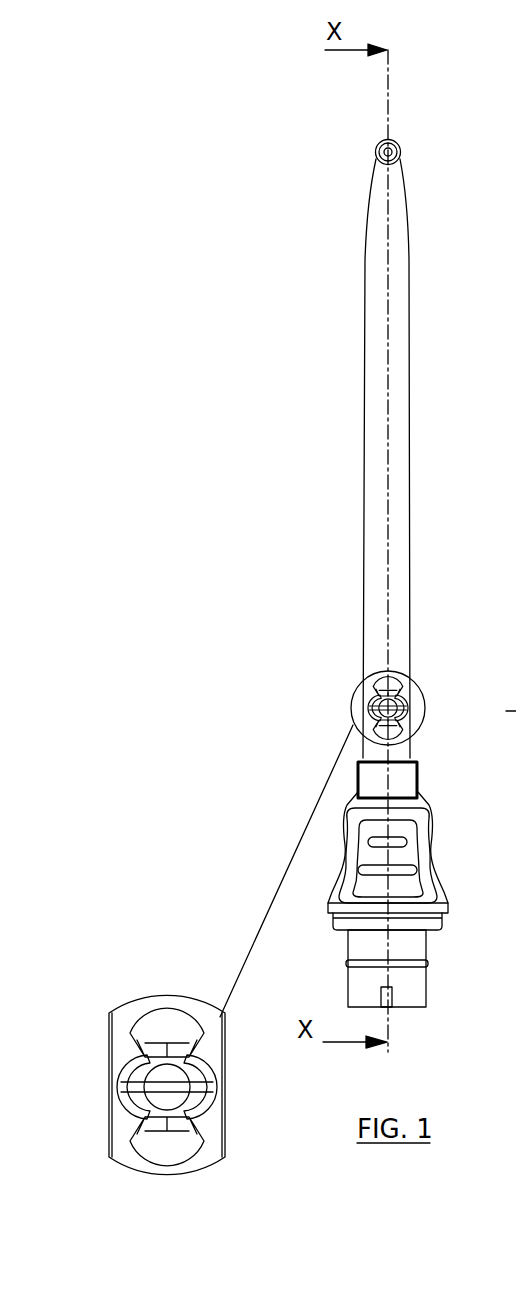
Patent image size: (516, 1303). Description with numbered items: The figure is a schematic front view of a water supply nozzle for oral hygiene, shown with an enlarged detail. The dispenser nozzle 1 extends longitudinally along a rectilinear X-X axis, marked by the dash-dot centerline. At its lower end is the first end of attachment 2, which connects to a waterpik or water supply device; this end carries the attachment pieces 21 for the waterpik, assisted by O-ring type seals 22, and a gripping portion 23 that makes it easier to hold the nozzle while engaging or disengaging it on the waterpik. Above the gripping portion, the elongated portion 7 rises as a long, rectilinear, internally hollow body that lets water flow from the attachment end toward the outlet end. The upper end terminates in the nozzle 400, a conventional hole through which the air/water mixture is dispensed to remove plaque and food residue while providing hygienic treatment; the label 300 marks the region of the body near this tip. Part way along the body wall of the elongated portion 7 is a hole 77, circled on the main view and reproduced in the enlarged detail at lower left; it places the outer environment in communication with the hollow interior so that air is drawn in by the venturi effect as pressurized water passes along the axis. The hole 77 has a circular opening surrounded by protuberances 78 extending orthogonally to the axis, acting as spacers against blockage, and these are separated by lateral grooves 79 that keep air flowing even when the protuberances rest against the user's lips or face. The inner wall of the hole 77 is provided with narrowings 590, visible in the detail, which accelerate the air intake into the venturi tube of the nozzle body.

The dispenser nozzle 1 is at (446, 337).
The first end of attachment 2 is at (455, 1017).
The elongated portion 7 is at (409, 502).
The attachment pieces 21 is at (380, 1002).
The O-ring type seals 22 is at (426, 980).
The gripping portion 23 is at (437, 865).
The hole 77 is at (138, 1139).
The protuberances 78 is at (153, 957).
The lateral grooves 79 is at (179, 1170).
The distal shaft portion 300 is at (431, 193).
The nozzle 400 is at (426, 125).
The narrowings 590 is at (177, 1098).